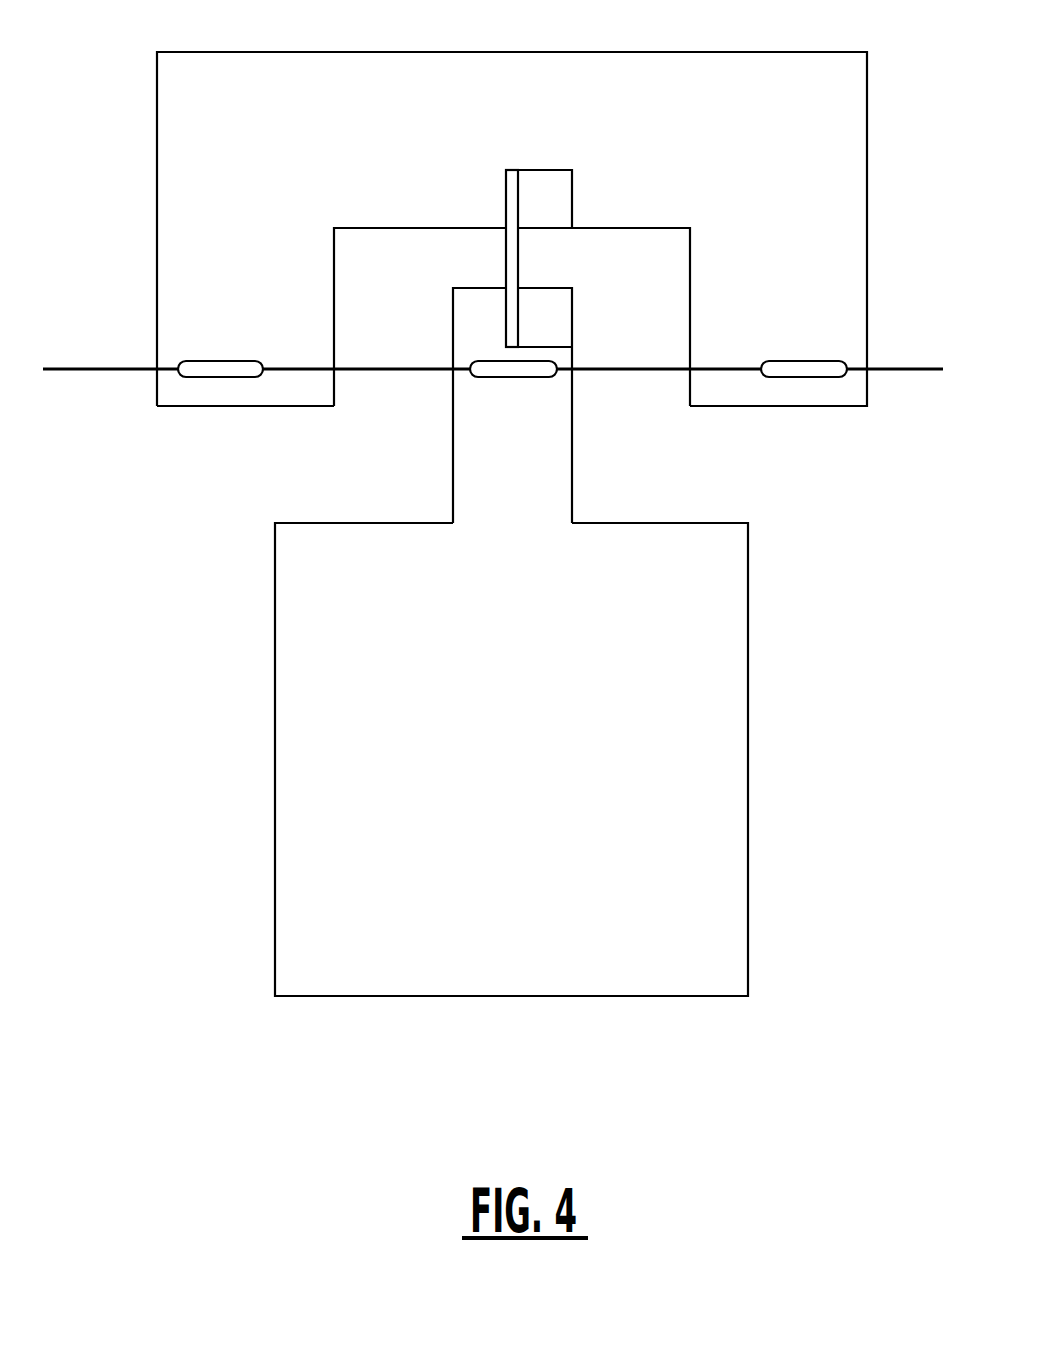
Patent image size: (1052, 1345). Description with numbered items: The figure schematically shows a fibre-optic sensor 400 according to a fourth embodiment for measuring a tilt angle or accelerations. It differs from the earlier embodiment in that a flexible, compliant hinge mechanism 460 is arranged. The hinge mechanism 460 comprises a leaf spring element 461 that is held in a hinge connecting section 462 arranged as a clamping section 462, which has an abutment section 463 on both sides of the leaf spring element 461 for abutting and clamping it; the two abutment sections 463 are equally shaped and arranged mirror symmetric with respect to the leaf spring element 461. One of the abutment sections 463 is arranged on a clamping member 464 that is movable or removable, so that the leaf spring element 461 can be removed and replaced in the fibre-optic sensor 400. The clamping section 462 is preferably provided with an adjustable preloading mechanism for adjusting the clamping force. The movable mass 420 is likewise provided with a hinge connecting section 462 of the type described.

The fibre-optic sensor 400 is at (123, 163).
The movable mass 420 is at (318, 642).
The hinge mechanism 460 is at (580, 294).
The leaf spring element 461 is at (513, 180).
The hinge connecting section 462 is at (440, 212).
The abutment section 463 is at (505, 218).
The clamping member 464 is at (567, 209).